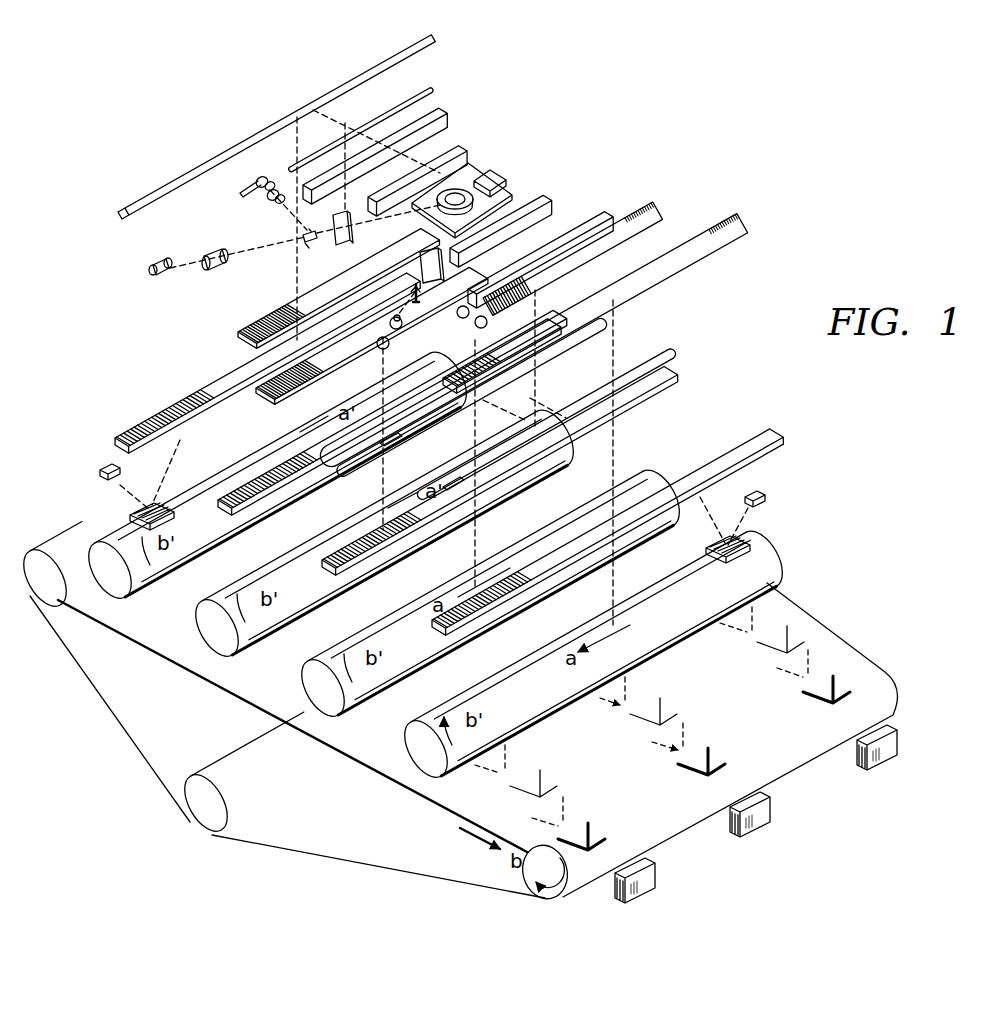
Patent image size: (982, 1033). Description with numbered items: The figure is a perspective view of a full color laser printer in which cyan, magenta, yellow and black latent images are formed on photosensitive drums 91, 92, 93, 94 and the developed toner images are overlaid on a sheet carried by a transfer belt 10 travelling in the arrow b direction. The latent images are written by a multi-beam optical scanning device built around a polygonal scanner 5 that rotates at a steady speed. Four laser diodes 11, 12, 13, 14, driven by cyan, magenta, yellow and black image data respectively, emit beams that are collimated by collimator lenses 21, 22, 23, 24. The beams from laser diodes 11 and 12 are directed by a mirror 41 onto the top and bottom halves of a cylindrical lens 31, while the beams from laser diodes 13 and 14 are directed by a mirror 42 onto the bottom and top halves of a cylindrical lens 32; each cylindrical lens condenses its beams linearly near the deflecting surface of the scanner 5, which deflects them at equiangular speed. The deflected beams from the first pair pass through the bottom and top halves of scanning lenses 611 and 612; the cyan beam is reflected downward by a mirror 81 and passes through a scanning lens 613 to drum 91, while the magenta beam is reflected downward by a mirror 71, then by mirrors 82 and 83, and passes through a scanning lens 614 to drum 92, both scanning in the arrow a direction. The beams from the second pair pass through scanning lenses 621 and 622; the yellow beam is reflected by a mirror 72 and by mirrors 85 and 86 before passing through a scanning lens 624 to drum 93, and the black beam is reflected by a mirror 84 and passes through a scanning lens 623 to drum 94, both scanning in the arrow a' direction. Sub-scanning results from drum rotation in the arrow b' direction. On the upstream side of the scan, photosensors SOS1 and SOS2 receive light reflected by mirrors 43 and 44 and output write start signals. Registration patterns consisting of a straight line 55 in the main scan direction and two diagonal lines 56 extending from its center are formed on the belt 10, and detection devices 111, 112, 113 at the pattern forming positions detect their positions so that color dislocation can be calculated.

The transfer belt 10 is at (278, 688).
The photosensitive drum 91 is at (423, 781).
The photosensitive drum 92 is at (323, 723).
The photosensitive drum 93 is at (215, 660).
The photosensitive drum 94 is at (112, 598).
The scanning lens 623 is at (110, 442).
The scanning lens 624 is at (310, 490).
The scanning lens 614 is at (668, 385).
The scanning lens 613 is at (770, 443).
The laser diode 12 is at (490, 322).
The laser diode 11 is at (388, 352).
The collimator lens 21 is at (408, 322).
The collimator lens 22 is at (485, 392).
The mirror 81 is at (745, 210).
The mirror 82 is at (668, 355).
The mirror 83 is at (600, 330).
The mirror 85 is at (238, 355).
The mirror 86 is at (256, 408).
The mirror 71 is at (665, 213).
The mirror 84 is at (198, 160).
The mirror 72 is at (430, 85).
The scanning lens 622 is at (446, 118).
The scanning lens 621 is at (470, 152).
The scanning lens 611 is at (550, 195).
The scanning lens 612 is at (612, 203).
The polygonal scanner 5 is at (513, 182).
The cylindrical lens 31 is at (420, 265).
The mirror 41 is at (412, 292).
The cylindrical lens 32 is at (340, 243).
The mirror 42 is at (306, 242).
The laser diode 13 is at (250, 180).
The collimator lens 23 is at (266, 204).
The laser diode 14 is at (148, 268).
The collimator lens 24 is at (213, 272).
The mirror 43 is at (720, 570).
The mirror 44 is at (128, 516).
The photosensor SOS1 is at (768, 500).
The photosensor SOS2 is at (98, 472).
The detection device 111 is at (900, 735).
The detection device 112 is at (775, 805).
The detection device 113 is at (660, 870).
The straight line 55 is at (714, 772).
The diagonal lines 56 is at (812, 715).